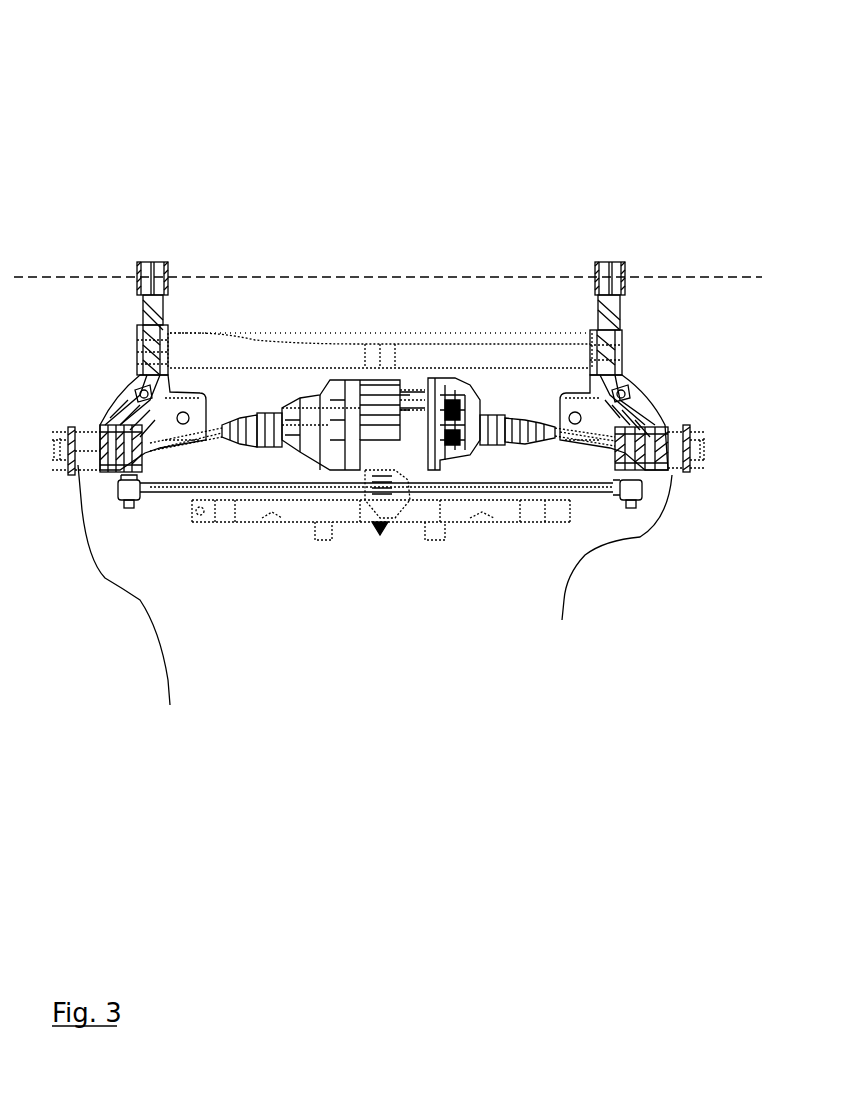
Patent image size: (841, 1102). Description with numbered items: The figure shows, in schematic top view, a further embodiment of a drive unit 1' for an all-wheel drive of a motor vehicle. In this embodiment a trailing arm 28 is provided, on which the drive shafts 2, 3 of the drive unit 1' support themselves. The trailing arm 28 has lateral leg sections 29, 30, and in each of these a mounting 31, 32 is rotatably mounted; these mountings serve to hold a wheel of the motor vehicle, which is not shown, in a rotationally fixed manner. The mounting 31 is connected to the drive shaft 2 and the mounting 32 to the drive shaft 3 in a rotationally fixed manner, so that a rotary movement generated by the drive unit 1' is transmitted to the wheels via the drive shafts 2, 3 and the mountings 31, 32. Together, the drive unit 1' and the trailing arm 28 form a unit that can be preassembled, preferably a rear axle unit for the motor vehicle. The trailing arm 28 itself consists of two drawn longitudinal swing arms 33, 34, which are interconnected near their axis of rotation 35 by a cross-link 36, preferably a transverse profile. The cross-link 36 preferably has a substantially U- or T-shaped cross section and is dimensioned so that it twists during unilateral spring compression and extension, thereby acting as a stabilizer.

The drive unit 1' is at (388, 245).
The drive shaft 2 is at (178, 445).
The drive shaft 3 is at (572, 437).
The trailing arm 28 is at (213, 350).
The lateral leg section 29 is at (110, 410).
The lateral leg section 30 is at (648, 412).
The mounting 31 is at (131, 605).
The mounting 32 is at (610, 566).
The longitudinal swing arm 33 is at (137, 325).
The longitudinal swing arm 34 is at (618, 360).
The axis of rotation 35 is at (652, 277).
The cross-link 36 is at (331, 358).